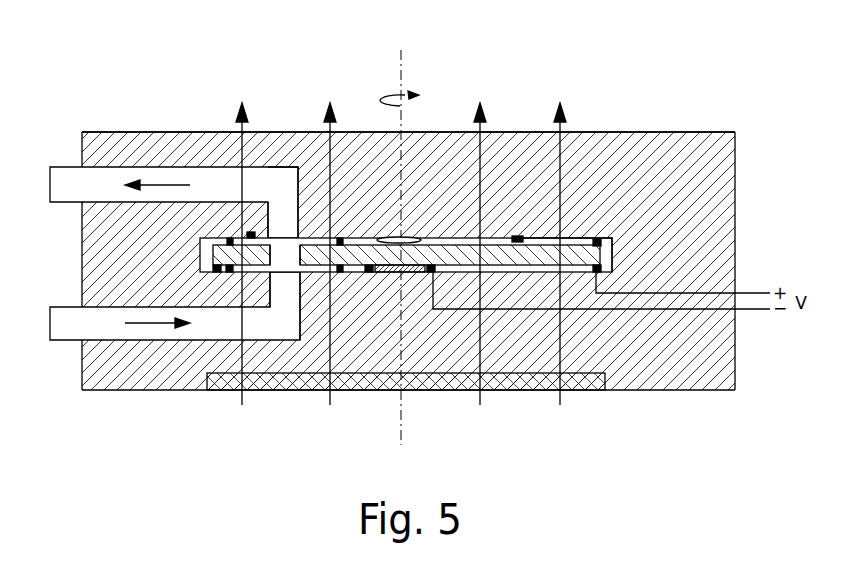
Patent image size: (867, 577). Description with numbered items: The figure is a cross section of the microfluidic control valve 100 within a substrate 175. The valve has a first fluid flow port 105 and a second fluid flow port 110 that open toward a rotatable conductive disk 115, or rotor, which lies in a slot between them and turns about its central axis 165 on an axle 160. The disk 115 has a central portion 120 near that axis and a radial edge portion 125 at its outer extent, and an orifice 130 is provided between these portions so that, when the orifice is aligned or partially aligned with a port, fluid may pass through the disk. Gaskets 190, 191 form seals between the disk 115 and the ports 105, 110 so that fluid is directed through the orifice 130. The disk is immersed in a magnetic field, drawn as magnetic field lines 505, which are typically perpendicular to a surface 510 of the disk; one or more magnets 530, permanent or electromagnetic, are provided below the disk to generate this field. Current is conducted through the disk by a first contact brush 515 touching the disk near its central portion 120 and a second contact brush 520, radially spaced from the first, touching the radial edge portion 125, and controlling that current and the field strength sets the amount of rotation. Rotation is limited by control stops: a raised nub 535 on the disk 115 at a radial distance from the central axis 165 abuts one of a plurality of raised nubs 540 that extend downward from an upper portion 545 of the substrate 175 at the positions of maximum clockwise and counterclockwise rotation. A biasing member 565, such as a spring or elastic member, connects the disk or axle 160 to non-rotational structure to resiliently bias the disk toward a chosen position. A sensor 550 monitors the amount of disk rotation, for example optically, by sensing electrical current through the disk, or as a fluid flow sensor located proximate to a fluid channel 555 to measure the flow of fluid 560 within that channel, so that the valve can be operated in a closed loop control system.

The control valve 100 is at (116, 108).
The first fluid flow port 105 is at (250, 391).
The second fluid flow port 110 is at (277, 232).
The rotatable conductive disk 115 is at (370, 257).
The central portion 120 is at (437, 257).
The radial edge portion 125 is at (612, 258).
The orifice 130 is at (282, 253).
The axle 160 is at (390, 273).
The central axis 165 is at (402, 72).
The substrate 175 is at (706, 184).
The gasket 190 is at (228, 242).
The gasket 191 is at (232, 272).
The magnetic field lines 505 is at (480, 405).
The surface 510 is at (580, 242).
The first contact brush 515 is at (429, 273).
The second contact brush 520 is at (598, 273).
The magnet 530 is at (225, 388).
The raised nub 535 is at (600, 238).
The raised nubs 540 is at (517, 236).
The upper portion 545 is at (537, 213).
The sensor 550 is at (247, 235).
The fluid channel 555 is at (270, 332).
The fluid 560 is at (290, 322).
The biasing member 565 is at (398, 240).